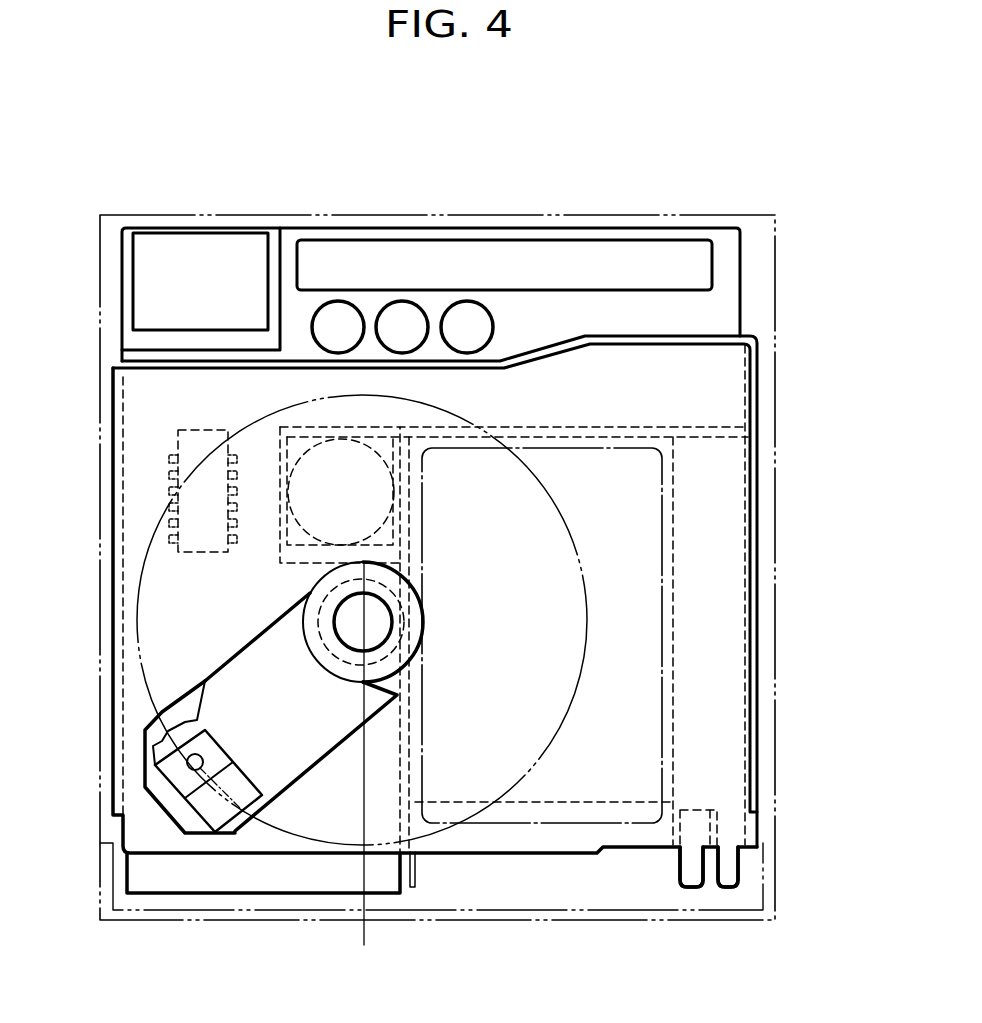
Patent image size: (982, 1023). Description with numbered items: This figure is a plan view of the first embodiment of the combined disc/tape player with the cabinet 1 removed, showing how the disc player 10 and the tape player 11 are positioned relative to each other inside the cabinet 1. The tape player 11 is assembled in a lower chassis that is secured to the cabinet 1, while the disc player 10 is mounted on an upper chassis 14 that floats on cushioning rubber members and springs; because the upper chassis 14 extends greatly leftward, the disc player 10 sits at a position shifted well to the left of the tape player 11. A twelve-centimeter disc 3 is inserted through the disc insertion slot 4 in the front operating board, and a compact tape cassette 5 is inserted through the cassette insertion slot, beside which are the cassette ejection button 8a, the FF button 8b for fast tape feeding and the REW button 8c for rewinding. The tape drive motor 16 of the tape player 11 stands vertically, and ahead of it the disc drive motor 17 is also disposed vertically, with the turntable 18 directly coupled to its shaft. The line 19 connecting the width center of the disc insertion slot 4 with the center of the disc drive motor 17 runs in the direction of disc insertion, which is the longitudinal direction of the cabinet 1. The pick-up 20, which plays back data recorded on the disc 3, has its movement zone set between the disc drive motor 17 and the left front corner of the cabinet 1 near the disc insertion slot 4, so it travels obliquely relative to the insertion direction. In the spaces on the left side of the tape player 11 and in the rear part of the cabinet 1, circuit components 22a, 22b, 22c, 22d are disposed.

The cabinet 1 is at (770, 549).
The disc 3 is at (137, 628).
The disc insertion slot 4 is at (300, 921).
The compact tape cassette 5 is at (663, 485).
The cassette ejection button 8a is at (417, 870).
The FF button 8b is at (728, 892).
The REW button 8c is at (697, 890).
The disc player 10 is at (134, 714).
The tape player 11 is at (723, 606).
The upper chassis 14 is at (760, 702).
The tape drive motor 16 is at (282, 548).
The disc drive motor 17 is at (308, 659).
The turntable 18 is at (345, 672).
The line 19 is at (368, 930).
The pick-up 20 is at (228, 783).
The circuit component 22a is at (655, 240).
The circuit component 22b is at (463, 302).
The circuit component 22c is at (132, 285).
The circuit component 22d is at (170, 458).